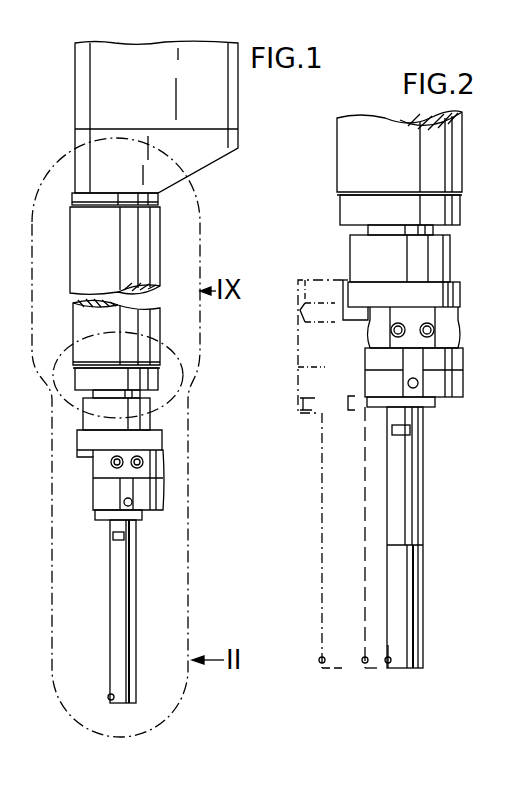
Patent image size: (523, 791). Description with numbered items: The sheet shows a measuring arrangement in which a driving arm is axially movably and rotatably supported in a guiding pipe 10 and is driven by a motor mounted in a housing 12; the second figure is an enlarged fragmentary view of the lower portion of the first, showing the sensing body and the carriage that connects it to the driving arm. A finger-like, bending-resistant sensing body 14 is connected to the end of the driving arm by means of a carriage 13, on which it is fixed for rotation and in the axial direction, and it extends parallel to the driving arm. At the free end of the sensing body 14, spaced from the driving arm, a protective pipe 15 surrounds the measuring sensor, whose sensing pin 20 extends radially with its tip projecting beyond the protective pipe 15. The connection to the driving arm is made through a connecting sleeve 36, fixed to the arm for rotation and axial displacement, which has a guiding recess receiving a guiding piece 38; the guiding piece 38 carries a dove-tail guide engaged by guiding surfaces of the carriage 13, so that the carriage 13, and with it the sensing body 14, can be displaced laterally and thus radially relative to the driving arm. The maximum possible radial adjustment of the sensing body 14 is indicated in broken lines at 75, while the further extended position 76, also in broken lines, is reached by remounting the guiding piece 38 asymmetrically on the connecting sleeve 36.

In FIG. 1, the guiding pipe 10 is at (172, 244).
In FIG. 2, the guiding pipe 10 is at (470, 153).
In FIG. 1, the housing 12 is at (134, 98).
In FIG. 1, the carriage 13 is at (178, 477).
In FIG. 2, the carriage 13 is at (470, 348).
In FIG. 1, the sensing body 14 is at (150, 578).
In FIG. 2, the sensing body 14 is at (432, 495).
In FIG. 2, the protective pipe 15 is at (412, 607).
In FIG. 2, the sensing pin 20 is at (388, 666).
In FIG. 2, the connecting sleeve 36 is at (437, 256).
In FIG. 2, the guiding piece 38 is at (460, 304).
In FIG. 2, the maximum possible radial adjustment of the sensing body 75 is at (364, 565).
In FIG. 2, the extended position of the sensing body 76 is at (312, 601).